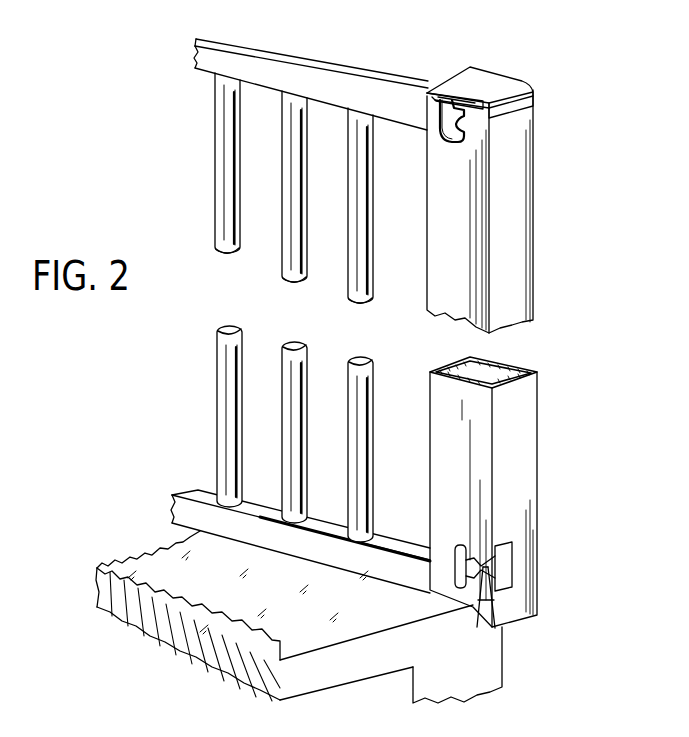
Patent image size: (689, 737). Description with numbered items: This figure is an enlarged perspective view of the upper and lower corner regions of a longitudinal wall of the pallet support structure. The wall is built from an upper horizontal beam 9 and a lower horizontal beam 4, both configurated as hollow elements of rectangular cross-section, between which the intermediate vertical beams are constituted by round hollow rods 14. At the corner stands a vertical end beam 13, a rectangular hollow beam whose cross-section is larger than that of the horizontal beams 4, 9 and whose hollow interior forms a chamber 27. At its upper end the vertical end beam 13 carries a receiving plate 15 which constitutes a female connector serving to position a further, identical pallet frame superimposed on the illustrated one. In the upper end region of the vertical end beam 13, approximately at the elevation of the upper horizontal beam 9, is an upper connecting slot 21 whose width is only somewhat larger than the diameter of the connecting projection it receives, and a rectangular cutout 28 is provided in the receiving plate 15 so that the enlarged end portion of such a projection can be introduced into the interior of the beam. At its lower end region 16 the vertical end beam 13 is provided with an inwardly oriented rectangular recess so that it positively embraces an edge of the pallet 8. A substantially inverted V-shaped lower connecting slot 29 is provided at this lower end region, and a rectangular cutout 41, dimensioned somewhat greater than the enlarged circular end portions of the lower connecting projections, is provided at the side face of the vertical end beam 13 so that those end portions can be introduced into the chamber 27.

The horizontal beam 4 is at (200, 515).
The pallet 8 is at (182, 598).
The upper horizontal beam 9 is at (259, 70).
The vertical end beam 13 is at (520, 255).
The round hollow rod 14 is at (220, 190).
The receiving plate 15 is at (472, 92).
The lower end region 16 is at (490, 607).
The upper connecting slot 21 is at (462, 134).
The chamber 27 is at (508, 372).
The rectangular cutout 28 is at (456, 100).
The lower connecting slot 29 is at (481, 566).
The rectangular cutout 41 is at (502, 568).